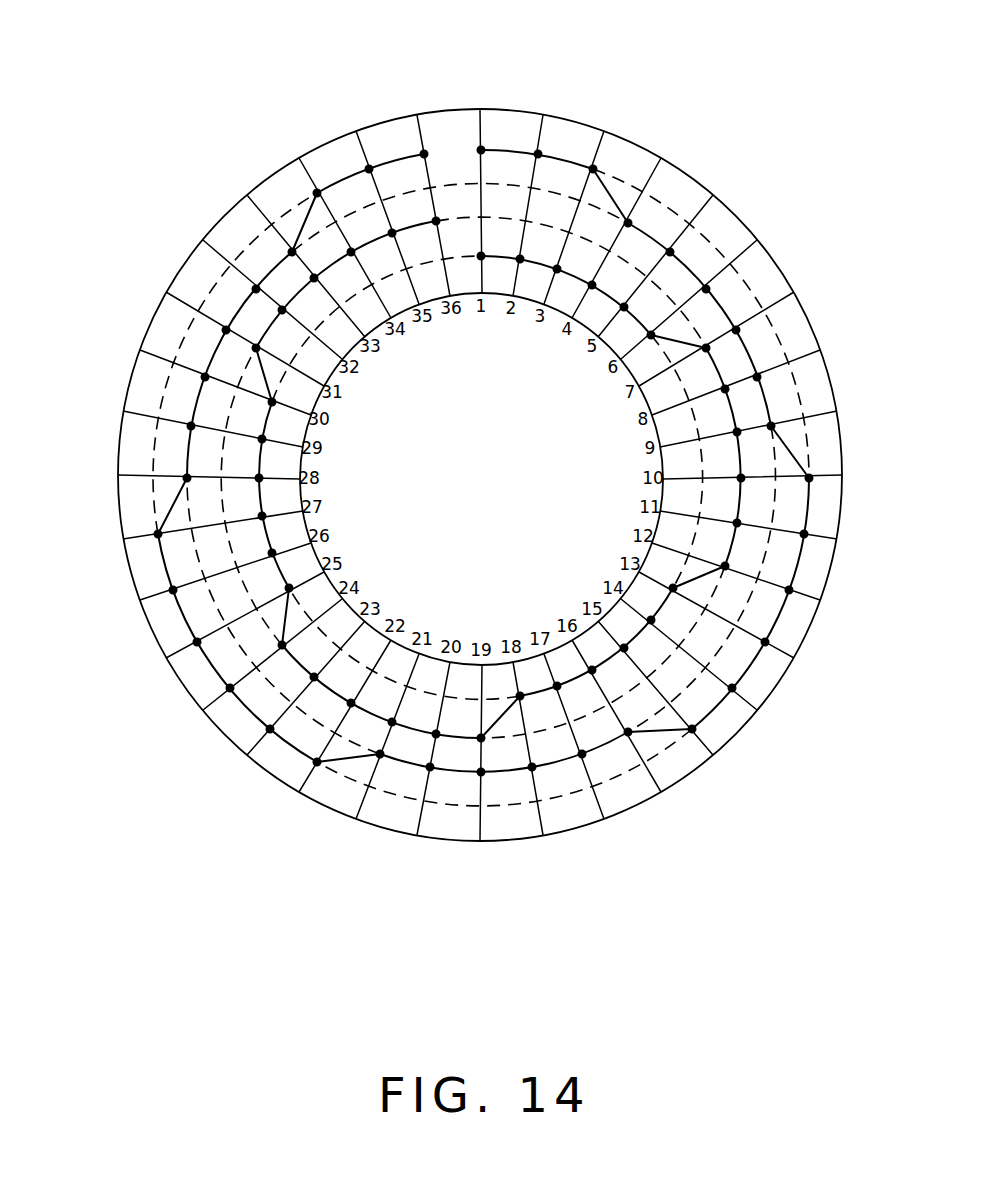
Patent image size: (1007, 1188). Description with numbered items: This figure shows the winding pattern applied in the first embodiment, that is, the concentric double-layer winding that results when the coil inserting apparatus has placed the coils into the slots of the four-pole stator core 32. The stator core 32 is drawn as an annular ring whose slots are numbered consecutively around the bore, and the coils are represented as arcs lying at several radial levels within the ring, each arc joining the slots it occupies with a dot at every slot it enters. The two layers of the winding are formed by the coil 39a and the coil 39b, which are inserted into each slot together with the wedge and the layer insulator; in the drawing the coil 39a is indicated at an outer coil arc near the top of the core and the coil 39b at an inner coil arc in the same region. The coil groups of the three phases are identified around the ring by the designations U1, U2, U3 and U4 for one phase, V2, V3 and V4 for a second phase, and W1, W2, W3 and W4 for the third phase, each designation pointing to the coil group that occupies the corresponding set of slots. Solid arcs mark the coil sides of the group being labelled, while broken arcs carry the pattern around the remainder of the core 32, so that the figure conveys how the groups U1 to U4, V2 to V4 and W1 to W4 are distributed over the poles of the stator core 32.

The stator core 32 is at (459, 108).
The coil 39a is at (568, 158).
The coil 39b is at (498, 258).
The U-phase coil group 1 U1 is at (749, 281).
The U-phase coil group 2 U2 is at (240, 652).
The U-phase coil group 3 U3 is at (638, 694).
The U-phase coil group 4 U4 is at (356, 297).
The V-phase coil group 2 V2 is at (529, 803).
The V-phase coil group 3 V3 is at (228, 542).
The V-phase coil group 4 V4 is at (702, 462).
The W-phase coil group 1 W1 is at (220, 290).
The W-phase coil group 2 W2 is at (752, 612).
The W-phase coil group 3 W3 is at (612, 190).
The W-phase coil group 4 W4 is at (402, 682).